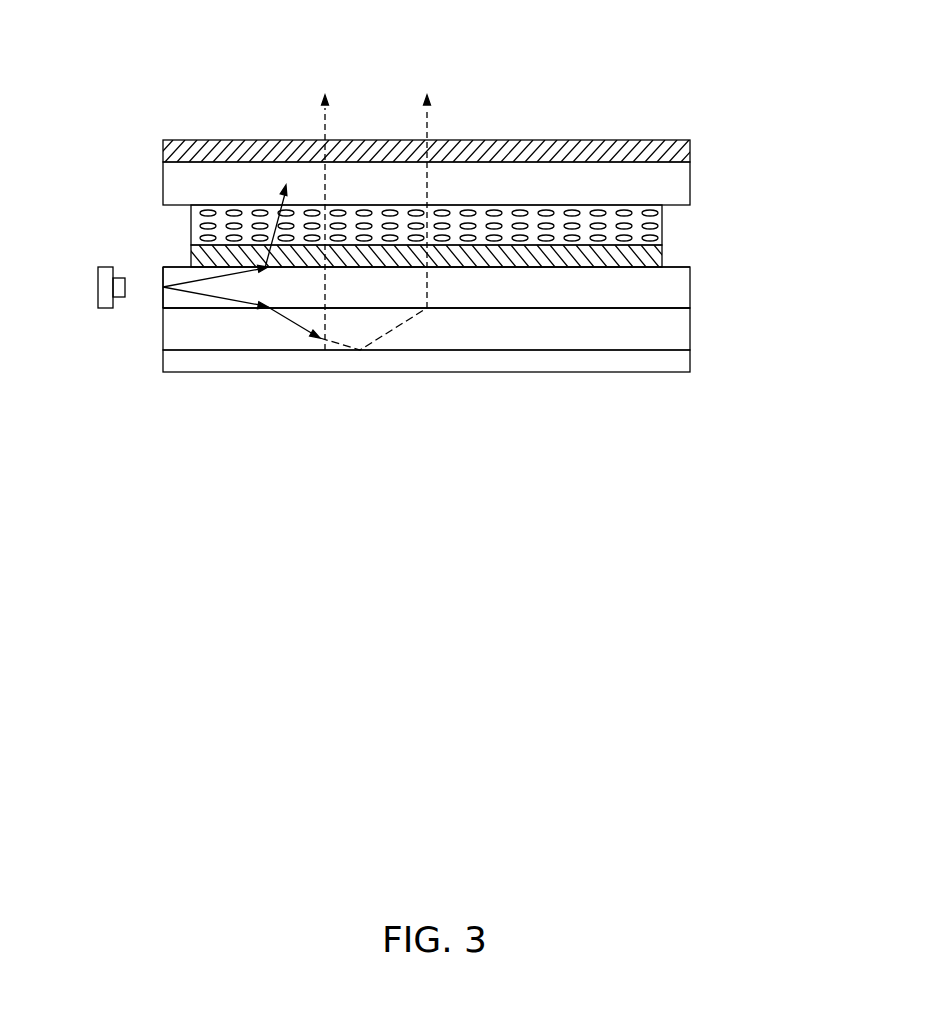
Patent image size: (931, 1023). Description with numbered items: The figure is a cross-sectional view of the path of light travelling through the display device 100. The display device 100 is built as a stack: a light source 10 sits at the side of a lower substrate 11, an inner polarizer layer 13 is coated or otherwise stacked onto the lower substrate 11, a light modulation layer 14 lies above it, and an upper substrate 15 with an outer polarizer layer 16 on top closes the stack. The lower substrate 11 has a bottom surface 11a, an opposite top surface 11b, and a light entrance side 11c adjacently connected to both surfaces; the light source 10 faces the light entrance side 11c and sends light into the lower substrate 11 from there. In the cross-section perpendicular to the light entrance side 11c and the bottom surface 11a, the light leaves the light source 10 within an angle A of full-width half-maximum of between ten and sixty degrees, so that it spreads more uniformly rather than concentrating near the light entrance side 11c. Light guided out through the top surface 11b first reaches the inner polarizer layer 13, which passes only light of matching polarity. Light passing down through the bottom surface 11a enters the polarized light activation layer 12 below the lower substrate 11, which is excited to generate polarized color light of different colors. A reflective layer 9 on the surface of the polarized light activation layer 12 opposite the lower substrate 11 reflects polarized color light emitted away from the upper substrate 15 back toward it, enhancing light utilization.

The display device 100 is at (177, 112).
The outer polarizer layer 16 is at (690, 148).
The upper substrate 15 is at (678, 190).
The light modulation layer 14 is at (645, 218).
The inner polarizer layer 13 is at (650, 258).
The lower substrate 11 is at (672, 293).
The bottom surface 11a is at (677, 310).
The top surface 11b is at (683, 262).
The light entrance side 11c is at (160, 291).
The polarized light activation layer 12 is at (680, 335).
The reflective layer 9 is at (678, 362).
The light source 10 is at (103, 290).
The angle of the full-width half-maximum A is at (202, 281).